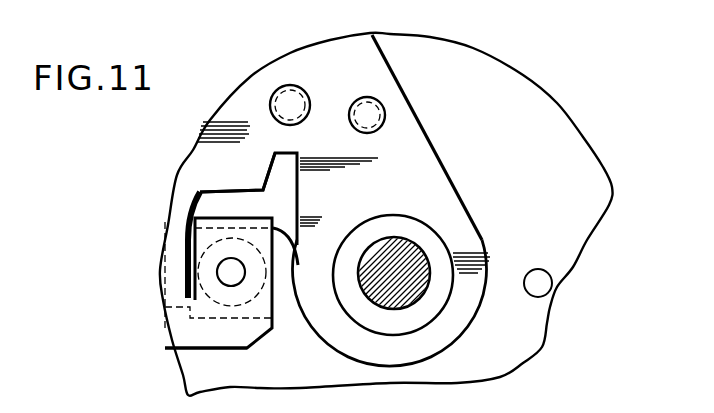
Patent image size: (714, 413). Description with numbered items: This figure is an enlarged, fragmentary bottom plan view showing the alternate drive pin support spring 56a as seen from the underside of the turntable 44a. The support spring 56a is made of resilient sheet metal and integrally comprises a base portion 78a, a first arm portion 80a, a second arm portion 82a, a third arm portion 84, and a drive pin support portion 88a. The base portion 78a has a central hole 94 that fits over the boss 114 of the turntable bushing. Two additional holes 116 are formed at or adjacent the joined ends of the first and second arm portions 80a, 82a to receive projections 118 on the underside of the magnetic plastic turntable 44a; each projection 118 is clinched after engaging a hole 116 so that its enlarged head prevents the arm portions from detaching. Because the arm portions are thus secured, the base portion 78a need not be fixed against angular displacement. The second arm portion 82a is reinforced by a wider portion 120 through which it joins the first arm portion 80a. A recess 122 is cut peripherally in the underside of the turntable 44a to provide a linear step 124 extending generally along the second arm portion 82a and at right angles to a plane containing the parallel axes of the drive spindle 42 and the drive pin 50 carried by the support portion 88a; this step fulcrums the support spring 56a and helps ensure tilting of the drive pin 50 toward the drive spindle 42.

The turntable 44a is at (548, 110).
The second arm portion 82a is at (198, 157).
The drive pin support spring 56a is at (420, 115).
The first arm portion 80a is at (440, 175).
The projections 118 is at (357, 103).
The holes 116 is at (350, 122).
The central hole 94 is at (383, 216).
The boss 114 is at (428, 305).
The drive spindle 42 is at (370, 290).
The base portion 78a is at (481, 308).
The drive pin support portion 88a is at (185, 245).
The wider portion 120 is at (270, 172).
The recess 122 is at (160, 243).
The linear step 124 is at (178, 290).
The drive pin 50 is at (168, 308).
The bottom portion 84 is at (173, 342).